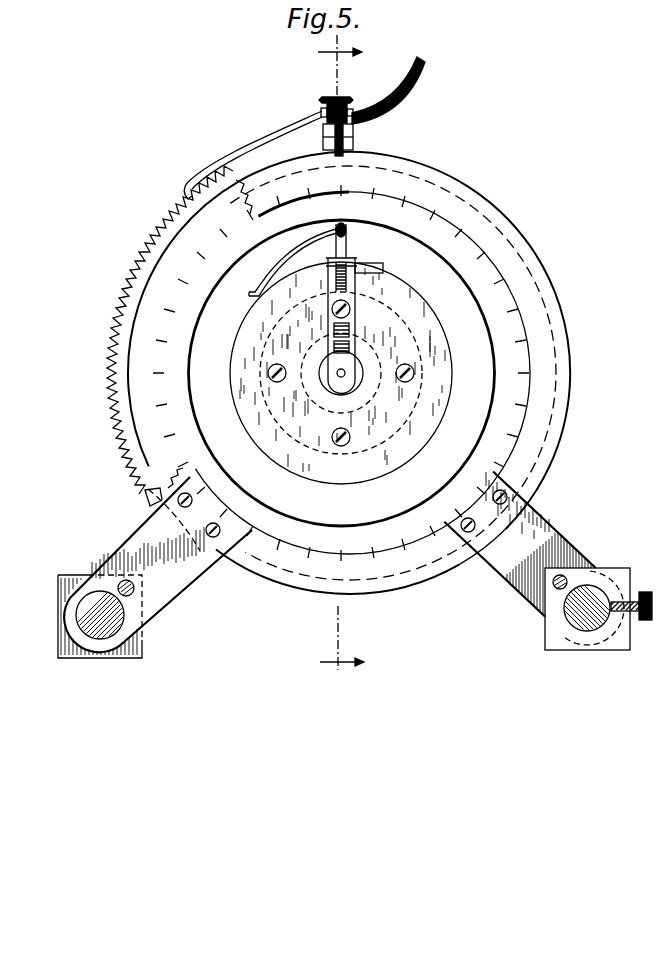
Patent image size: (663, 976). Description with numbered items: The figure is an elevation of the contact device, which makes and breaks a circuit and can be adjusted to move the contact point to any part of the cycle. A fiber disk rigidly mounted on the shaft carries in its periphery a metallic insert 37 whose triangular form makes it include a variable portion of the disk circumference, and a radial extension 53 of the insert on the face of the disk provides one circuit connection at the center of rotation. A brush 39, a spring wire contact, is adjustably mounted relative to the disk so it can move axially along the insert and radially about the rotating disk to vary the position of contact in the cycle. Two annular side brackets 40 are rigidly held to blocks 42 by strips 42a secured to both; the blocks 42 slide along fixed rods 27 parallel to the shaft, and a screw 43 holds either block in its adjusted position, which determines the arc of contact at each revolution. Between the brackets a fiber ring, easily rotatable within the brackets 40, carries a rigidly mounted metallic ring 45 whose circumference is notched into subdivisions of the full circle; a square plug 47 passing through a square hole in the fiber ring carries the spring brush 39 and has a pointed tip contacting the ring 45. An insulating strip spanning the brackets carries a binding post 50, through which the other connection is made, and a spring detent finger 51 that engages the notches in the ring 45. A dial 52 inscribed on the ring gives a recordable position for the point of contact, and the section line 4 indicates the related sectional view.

The section line 4- 4 is at (348, 363).
The fixed rods 27 is at (570, 617).
The metallic insert 37 is at (371, 268).
The brush 39 is at (294, 262).
The annular side brackets 40 is at (540, 388).
The blocks 42 is at (142, 643).
The strips 42a is at (586, 528).
The screw 43 is at (645, 590).
The metallic ring 45 is at (146, 268).
The square plug 47 is at (345, 236).
The binding post 50 is at (337, 97).
The spring detent finger 51 is at (236, 152).
The dial 52 is at (185, 304).
The radial extension 53 is at (347, 362).